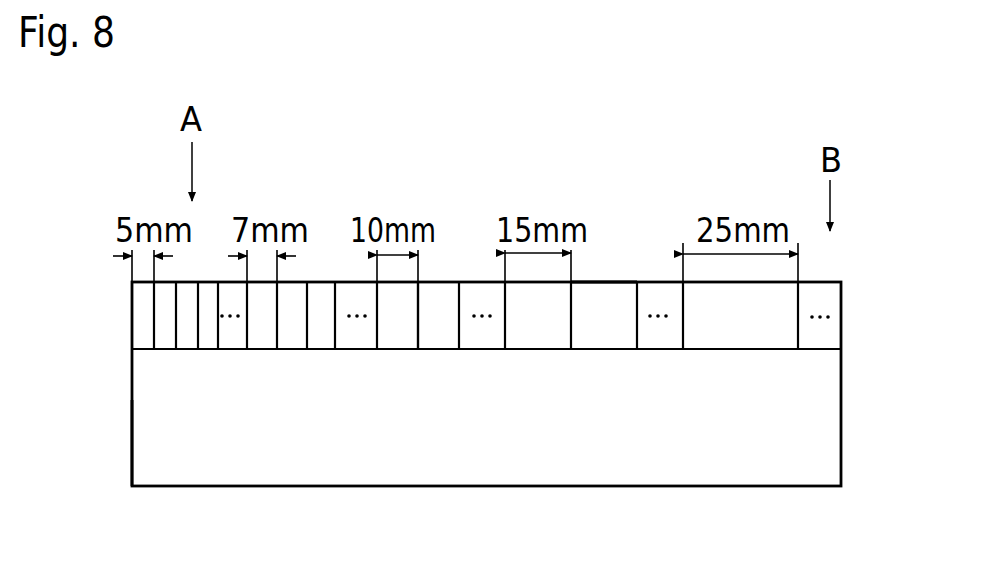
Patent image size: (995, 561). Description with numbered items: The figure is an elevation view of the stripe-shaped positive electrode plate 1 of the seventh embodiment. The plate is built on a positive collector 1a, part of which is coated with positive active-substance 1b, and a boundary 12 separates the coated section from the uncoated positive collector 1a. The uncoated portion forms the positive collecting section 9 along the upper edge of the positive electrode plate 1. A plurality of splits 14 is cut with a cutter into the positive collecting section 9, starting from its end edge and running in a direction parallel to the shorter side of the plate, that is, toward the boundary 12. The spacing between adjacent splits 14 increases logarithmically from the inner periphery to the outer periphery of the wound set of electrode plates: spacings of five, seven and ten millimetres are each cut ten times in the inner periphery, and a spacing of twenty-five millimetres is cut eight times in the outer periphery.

The positive electrode plate 1 is at (131, 390).
The positive collector 1a is at (818, 302).
The positive active-substance 1b is at (817, 443).
The positive collecting section 9 is at (593, 282).
The boundary 12 is at (745, 350).
The splits 14 is at (420, 307).